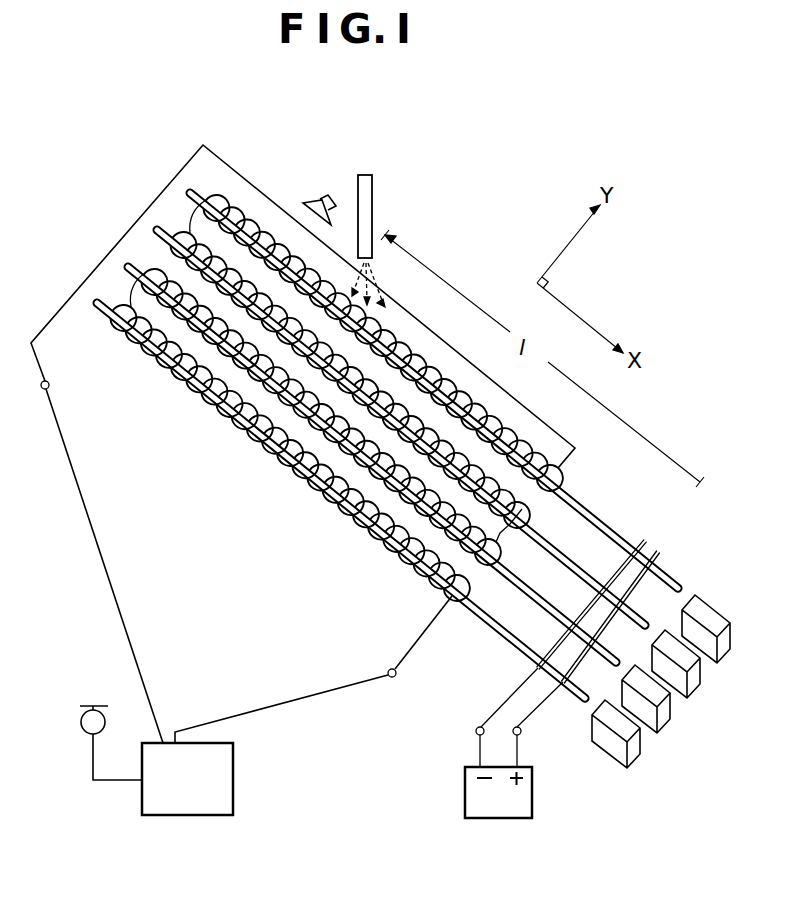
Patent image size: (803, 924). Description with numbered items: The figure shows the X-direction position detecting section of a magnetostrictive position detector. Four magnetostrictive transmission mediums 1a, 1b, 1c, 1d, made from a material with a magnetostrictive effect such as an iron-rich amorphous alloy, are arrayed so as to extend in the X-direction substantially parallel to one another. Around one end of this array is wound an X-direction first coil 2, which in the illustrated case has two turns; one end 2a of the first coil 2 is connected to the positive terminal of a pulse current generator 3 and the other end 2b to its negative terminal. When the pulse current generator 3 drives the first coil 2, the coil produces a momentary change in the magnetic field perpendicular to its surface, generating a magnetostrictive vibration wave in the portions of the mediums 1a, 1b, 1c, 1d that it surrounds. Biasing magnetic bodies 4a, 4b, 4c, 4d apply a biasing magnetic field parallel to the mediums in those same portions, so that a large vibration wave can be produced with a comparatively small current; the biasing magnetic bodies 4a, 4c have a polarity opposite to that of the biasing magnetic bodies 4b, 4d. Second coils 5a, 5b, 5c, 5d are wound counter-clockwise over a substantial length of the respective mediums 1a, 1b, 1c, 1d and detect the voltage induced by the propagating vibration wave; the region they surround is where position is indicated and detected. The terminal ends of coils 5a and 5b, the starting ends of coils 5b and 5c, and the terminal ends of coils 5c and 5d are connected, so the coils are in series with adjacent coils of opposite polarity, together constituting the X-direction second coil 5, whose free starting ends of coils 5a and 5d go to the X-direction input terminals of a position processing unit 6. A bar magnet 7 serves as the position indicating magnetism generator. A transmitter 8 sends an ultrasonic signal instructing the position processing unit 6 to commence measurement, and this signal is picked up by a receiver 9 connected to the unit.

The magnetostrictive transmission medium 1a is at (502, 637).
The magnetostrictive transmission medium 1b is at (545, 608).
The magnetostrictive transmission medium 1c is at (571, 568).
The magnetostrictive transmission medium 1d is at (588, 516).
The X-direction first coil 2 is at (643, 541).
The one end of the first coil 2a is at (519, 735).
The other end of the first coil 2b is at (477, 735).
The pulse current generator 3 is at (465, 802).
The biasing magnetic body 4a is at (627, 768).
The biasing magnetic body 4b is at (657, 733).
The biasing magnetic body 4c is at (687, 698).
The biasing magnetic body 4d is at (717, 663).
The X-direction second coil 5 is at (348, 401).
The second coil 5a is at (295, 470).
The second coil 5b is at (482, 569).
The second coil 5c is at (523, 497).
The second coil 5d is at (492, 417).
The position processing unit 6 is at (233, 780).
The bar magnet 7 is at (372, 203).
The transmitter 8 is at (320, 197).
The receiver 9 is at (83, 738).